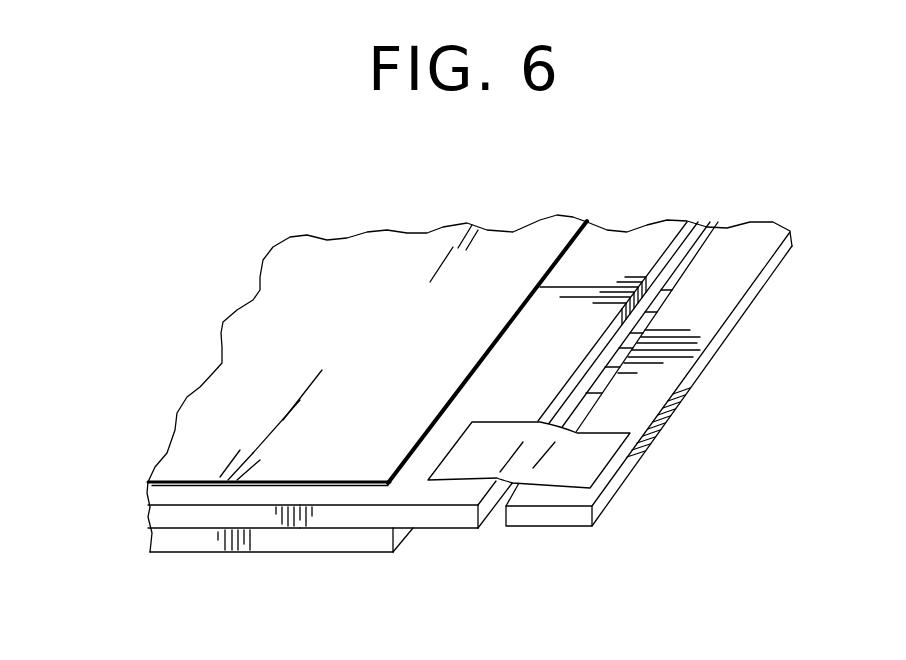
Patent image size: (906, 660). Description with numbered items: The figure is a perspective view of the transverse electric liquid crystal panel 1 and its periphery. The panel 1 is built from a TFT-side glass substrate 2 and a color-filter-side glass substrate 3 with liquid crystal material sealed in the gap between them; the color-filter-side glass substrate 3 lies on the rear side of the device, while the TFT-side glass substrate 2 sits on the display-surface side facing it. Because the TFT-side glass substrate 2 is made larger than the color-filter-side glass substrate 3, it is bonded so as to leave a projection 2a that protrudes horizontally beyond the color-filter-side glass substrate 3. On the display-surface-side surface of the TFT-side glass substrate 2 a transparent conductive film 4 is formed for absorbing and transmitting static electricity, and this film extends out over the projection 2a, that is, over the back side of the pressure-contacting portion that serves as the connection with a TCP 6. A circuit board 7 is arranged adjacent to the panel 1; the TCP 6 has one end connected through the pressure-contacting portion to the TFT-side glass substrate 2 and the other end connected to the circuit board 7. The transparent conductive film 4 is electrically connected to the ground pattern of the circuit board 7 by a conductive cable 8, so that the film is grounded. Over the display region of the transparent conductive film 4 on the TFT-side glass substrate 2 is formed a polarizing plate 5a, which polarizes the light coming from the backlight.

The transverse electric liquid crystal panel 1 is at (282, 540).
The TFT-side glass substrate 2 is at (165, 519).
The projection 2a is at (437, 518).
The color-filter-side glass substrate 3 is at (345, 541).
The transparent conductive film 4 is at (618, 258).
The polarizing plate 5a is at (243, 397).
The TCP 6 is at (653, 310).
The circuit board 7 is at (547, 522).
The conductive cable 8 is at (597, 455).